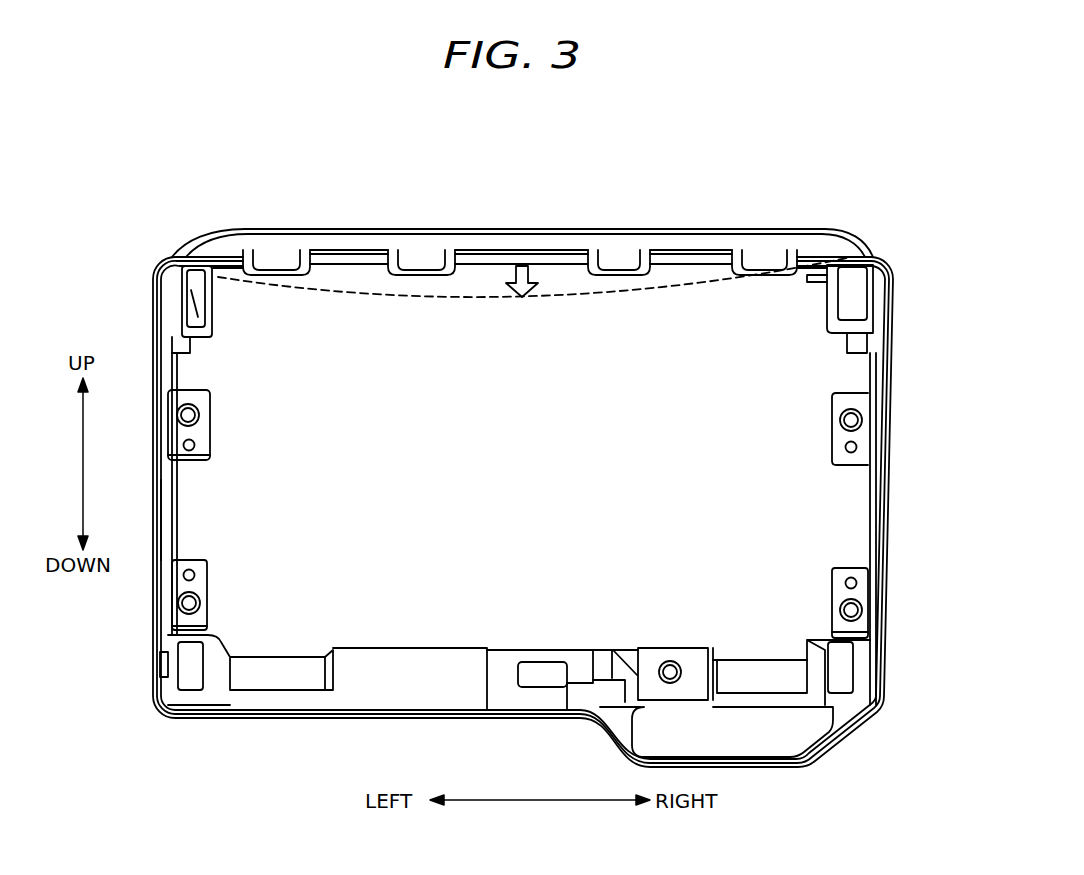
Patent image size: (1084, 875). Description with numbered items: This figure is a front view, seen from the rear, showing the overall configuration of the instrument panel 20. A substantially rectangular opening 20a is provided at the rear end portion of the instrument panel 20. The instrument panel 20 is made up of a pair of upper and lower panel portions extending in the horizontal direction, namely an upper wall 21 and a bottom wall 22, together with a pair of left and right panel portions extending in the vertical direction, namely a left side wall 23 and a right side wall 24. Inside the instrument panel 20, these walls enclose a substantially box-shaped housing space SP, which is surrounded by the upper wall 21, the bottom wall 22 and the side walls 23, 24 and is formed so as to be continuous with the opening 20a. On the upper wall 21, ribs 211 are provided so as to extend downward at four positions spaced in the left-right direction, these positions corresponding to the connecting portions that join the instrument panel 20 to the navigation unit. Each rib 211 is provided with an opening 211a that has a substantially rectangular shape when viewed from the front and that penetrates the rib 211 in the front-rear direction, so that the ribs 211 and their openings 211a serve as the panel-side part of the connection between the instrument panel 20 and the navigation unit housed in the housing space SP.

The instrument panel 20 is at (846, 224).
The opening 20a is at (180, 527).
The upper wall 21 is at (540, 228).
The rib 211 is at (243, 278).
The opening 211a is at (412, 257).
The bottom wall 22 is at (342, 722).
The left side wall 23 is at (155, 480).
The right side wall 24 is at (890, 520).
The housing space SP is at (800, 370).